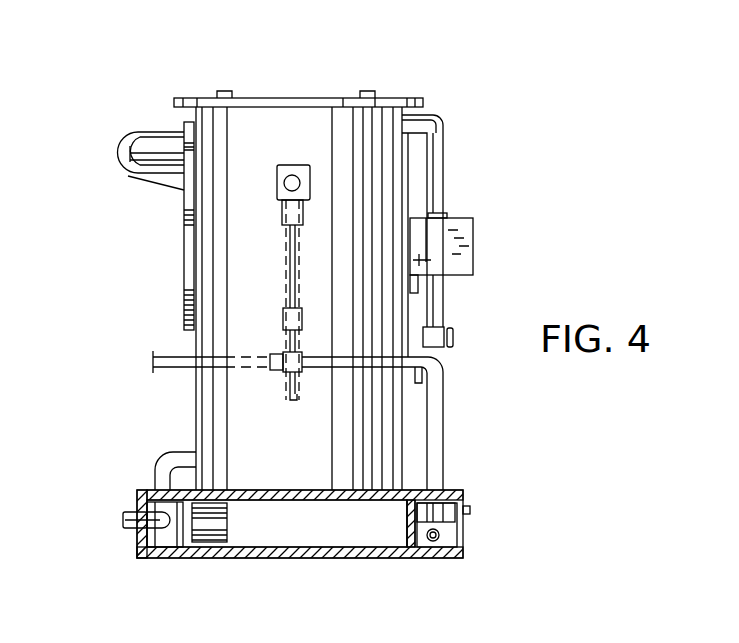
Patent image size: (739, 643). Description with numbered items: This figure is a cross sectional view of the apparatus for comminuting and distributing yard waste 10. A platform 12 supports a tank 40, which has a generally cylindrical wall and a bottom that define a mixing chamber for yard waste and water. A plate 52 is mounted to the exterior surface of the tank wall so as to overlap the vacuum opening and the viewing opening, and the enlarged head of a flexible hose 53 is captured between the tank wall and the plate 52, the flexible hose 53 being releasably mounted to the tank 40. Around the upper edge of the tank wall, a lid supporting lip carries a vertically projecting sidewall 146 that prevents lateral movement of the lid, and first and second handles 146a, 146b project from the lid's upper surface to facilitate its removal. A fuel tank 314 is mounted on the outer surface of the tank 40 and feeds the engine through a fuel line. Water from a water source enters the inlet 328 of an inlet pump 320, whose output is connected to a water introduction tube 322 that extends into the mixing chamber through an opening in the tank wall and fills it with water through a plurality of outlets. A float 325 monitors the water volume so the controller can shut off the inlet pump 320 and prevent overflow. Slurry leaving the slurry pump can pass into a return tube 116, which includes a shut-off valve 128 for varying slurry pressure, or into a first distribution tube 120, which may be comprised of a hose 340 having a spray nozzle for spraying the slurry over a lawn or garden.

The apparatus for comminuting and distributing yard waste 10 is at (548, 410).
The platform 12 is at (460, 537).
The tank 40 is at (196, 348).
The plate 52 is at (184, 236).
The flexible hose 53 is at (137, 146).
The return tube 116 is at (438, 305).
The first distribution tube 120 is at (438, 418).
The shut-off valve 128 is at (440, 348).
The sidewall 146 is at (263, 100).
The first handle 146a is at (370, 90).
The second handle 146b is at (222, 90).
The fuel tank 314 is at (475, 230).
The inlet pump 320 is at (218, 542).
The water introduction tube 322 is at (160, 458).
The float 325 is at (283, 315).
The inlet 328 is at (133, 530).
The hose 340 is at (158, 372).